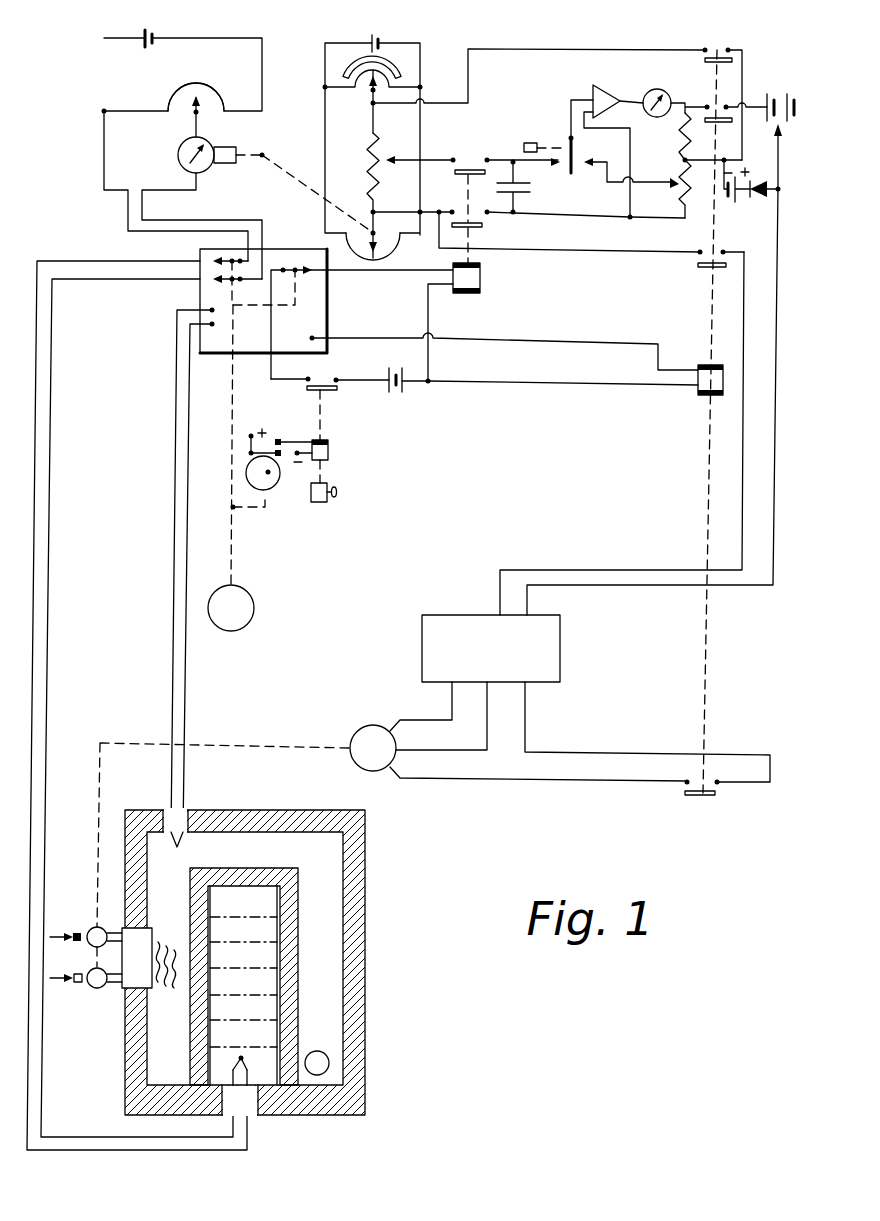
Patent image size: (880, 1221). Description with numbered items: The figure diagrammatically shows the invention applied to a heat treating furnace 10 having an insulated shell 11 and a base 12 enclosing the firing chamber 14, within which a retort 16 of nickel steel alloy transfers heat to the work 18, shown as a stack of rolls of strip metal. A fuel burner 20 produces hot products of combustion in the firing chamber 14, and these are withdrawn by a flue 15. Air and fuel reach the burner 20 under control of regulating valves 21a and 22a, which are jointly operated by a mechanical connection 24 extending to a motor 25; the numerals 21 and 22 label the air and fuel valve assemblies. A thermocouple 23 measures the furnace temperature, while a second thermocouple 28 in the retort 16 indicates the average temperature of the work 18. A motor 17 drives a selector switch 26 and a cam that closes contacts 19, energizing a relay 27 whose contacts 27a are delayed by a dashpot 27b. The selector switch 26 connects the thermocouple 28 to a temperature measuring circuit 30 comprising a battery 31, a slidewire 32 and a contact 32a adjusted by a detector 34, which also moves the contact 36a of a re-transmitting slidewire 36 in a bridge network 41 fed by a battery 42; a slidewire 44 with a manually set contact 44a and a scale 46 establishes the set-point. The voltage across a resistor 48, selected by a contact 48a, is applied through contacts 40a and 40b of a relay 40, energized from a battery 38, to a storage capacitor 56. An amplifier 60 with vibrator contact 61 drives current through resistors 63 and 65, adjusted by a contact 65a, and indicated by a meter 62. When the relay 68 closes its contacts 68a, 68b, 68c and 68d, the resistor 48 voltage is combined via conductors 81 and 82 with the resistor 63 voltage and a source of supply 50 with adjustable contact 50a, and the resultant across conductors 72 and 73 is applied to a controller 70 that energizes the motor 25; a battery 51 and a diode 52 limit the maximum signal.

The heat treating furnace 10 is at (275, 791).
The insulated shell 11 is at (355, 937).
The base 12 is at (333, 1107).
The firing chamber 14 is at (325, 861).
The flue 15 is at (325, 1065).
The retort 16 is at (297, 918).
The motor 17 is at (254, 601).
The work 18 is at (270, 480).
The contacts 19 is at (276, 440).
The fuel burner 20 is at (158, 930).
The air valve 21 is at (90, 928).
The regulating valve 21a is at (93, 926).
The fuel valve 22 is at (84, 984).
The regulating valve 22a is at (97, 989).
The thermocouple 23 is at (176, 848).
The mechanical connection 24 is at (125, 742).
The motor 25 is at (366, 727).
The selector switch 26 is at (200, 250).
The relay 27 is at (330, 446).
The contacts 27a is at (324, 380).
The dashpot 27b is at (322, 503).
The thermocouple 28 is at (241, 1058).
The temperature measuring circuit 30 is at (82, 109).
The battery 31 is at (153, 33).
The slidewire 32 is at (183, 88).
The contact 32a is at (192, 107).
The detector 34 is at (178, 157).
The slidewire 36 is at (393, 247).
The contact 36a is at (375, 213).
The battery 38 is at (397, 395).
The relay 40 is at (482, 284).
The contacts 40a is at (470, 163).
The contacts 40b is at (482, 218).
The bridge network 41 is at (328, 176).
The battery 42 is at (383, 37).
The slidewire 44 is at (353, 62).
The contact 44a is at (369, 80).
The scale 46 is at (400, 70).
The resistor 48 is at (375, 143).
The contact 48a is at (395, 157).
The source of supply 50 is at (773, 92).
The adjustable contact 50a is at (781, 183).
The battery 51 is at (733, 195).
The diode 52 is at (762, 198).
The storage capacitor 56 is at (531, 183).
The amplifier 60 is at (603, 85).
The movable contact 61 is at (576, 158).
The current responsive meter 62 is at (650, 88).
The resistor 63 is at (683, 133).
The resistor 65 is at (684, 183).
The contact 65a is at (674, 187).
The relay 68 is at (696, 397).
The contacts 68a is at (717, 49).
The contacts 68b is at (708, 100).
The contacts 68c is at (698, 254).
The contacts 68d is at (687, 792).
The controller 70 is at (453, 615).
The conductor 72 is at (740, 497).
The conductor 73 is at (752, 588).
The conductor 81 is at (448, 103).
The conductor 82 is at (439, 212).